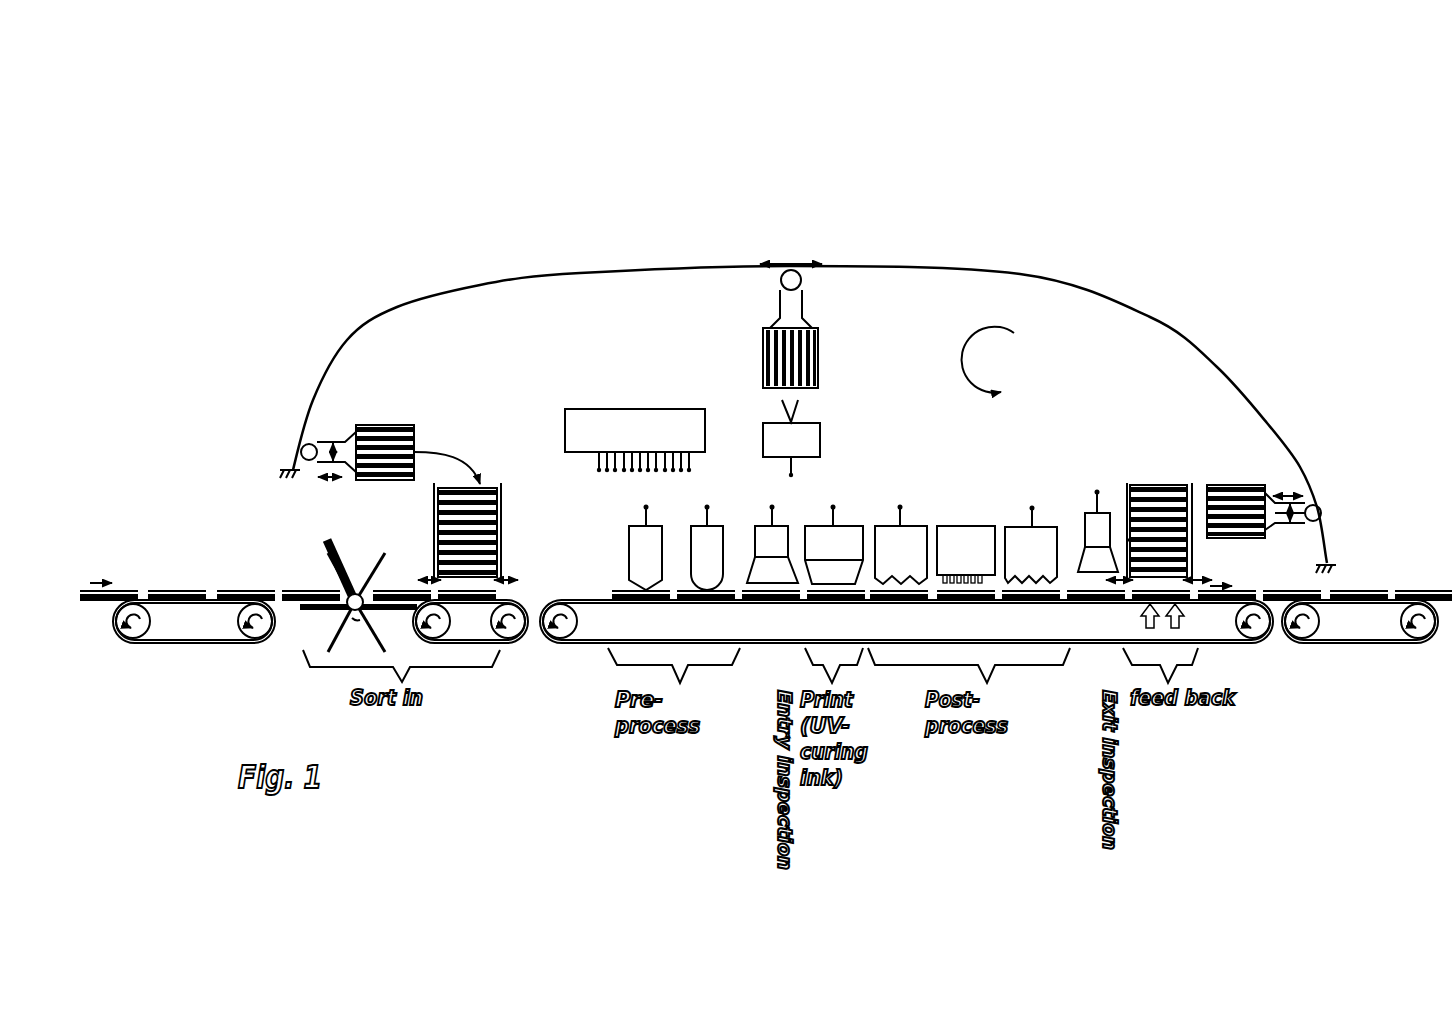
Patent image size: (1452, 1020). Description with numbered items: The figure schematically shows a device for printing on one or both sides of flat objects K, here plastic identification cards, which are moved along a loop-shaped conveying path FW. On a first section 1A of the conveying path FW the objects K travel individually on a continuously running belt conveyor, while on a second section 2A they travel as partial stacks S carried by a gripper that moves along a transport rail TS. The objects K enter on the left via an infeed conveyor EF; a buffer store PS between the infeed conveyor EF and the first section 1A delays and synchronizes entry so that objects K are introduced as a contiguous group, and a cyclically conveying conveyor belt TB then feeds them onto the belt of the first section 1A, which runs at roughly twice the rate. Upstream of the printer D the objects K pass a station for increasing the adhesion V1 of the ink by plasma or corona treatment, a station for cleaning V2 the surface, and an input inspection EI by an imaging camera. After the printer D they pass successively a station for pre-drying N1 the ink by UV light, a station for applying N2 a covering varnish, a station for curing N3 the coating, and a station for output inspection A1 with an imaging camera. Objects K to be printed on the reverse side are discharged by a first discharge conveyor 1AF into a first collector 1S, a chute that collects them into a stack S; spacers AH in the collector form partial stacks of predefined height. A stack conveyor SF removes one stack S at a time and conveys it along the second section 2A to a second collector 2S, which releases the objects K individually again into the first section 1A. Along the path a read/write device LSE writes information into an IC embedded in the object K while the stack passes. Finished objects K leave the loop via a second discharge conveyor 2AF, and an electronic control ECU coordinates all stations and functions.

The infeed conveyor EF is at (147, 583).
The flat objects K is at (177, 578).
The buffer store PS is at (356, 578).
The conveyor belt TB is at (470, 621).
The second collector 2S is at (499, 483).
The stack S is at (385, 404).
The second section of the conveying path 2A is at (488, 325).
The electronic control ECU is at (635, 440).
The read/write device LSE is at (791, 438).
The conveying path FW is at (989, 360).
The transport rail TS is at (1067, 297).
The first discharge conveyor 1AF is at (1158, 468).
The spacers AH is at (1127, 537).
The first collector 1S is at (1233, 503).
The stack conveyor SF is at (1280, 490).
The second discharge conveyor 2AF is at (1338, 583).
The station for increasing the adhesion V1 is at (645, 548).
The station for cleaning V2 is at (707, 548).
The input inspection EI is at (772, 544).
The printer D is at (834, 545).
The station for pre-drying N1 is at (901, 545).
The station for applying a covering varnish N2 is at (966, 554).
The station for curing N3 is at (1031, 545).
The station for output inspection A1 is at (1098, 531).
The first section of the conveying path 1A is at (887, 623).